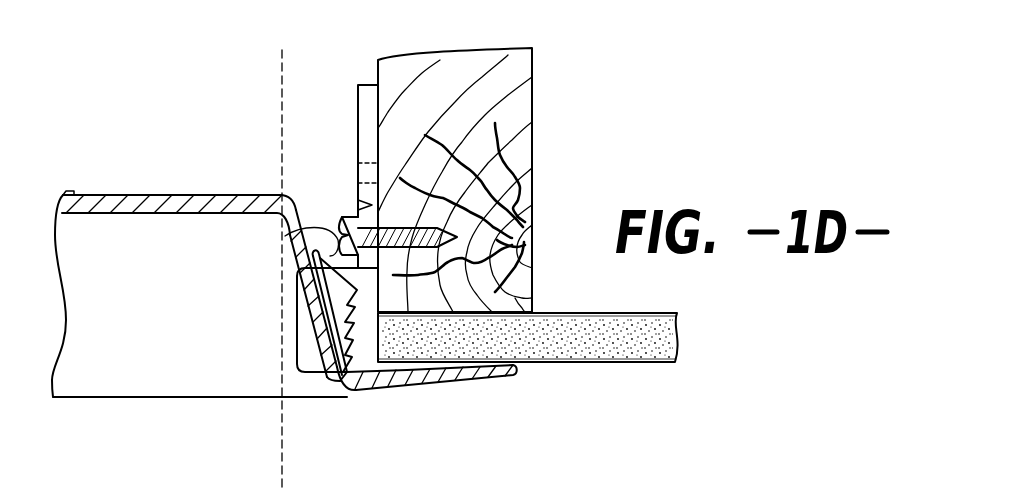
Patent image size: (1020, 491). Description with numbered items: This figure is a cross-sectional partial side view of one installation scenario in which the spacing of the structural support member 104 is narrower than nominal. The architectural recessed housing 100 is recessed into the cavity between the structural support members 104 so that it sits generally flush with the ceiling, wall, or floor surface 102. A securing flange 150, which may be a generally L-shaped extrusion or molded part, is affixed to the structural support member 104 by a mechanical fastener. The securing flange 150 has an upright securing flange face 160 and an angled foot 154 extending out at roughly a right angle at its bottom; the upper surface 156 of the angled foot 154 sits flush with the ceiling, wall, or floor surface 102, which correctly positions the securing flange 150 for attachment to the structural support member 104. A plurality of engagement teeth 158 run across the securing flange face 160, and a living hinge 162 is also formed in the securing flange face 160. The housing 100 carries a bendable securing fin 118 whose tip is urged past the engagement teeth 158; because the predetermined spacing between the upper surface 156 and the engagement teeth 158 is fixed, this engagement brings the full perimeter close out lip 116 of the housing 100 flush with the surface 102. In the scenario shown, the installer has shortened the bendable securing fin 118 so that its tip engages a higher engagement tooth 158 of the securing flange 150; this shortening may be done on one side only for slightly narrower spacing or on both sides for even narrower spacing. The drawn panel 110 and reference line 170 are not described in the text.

The architectural recessed housing 100 is at (153, 172).
The ceiling, wall, or floor surface 102 is at (604, 364).
The structural support member 104 is at (534, 130).
The panel 110 is at (185, 195).
The full perimeter close out lip 116 is at (487, 377).
The bendable securing fin 118 is at (285, 236).
The securing flange 150 is at (366, 97).
The angled foot 154 is at (372, 393).
The upper surface of the angled foot 156 is at (407, 352).
The engagement teeth 158 is at (297, 318).
The securing flange face 160 is at (357, 118).
The living hinge 162 is at (358, 207).
The reference plane line 170 is at (282, 80).